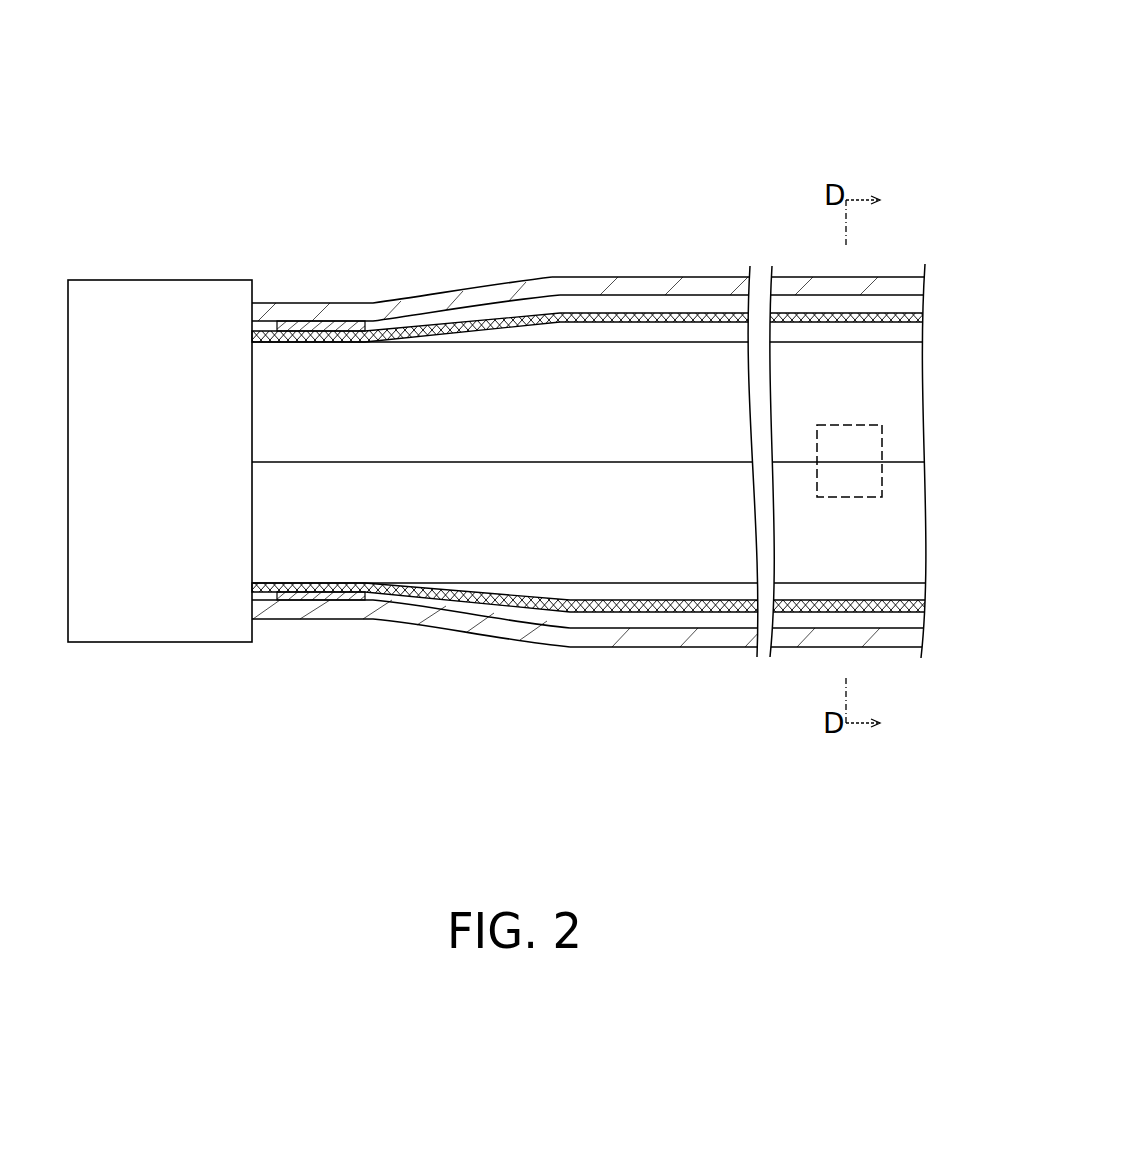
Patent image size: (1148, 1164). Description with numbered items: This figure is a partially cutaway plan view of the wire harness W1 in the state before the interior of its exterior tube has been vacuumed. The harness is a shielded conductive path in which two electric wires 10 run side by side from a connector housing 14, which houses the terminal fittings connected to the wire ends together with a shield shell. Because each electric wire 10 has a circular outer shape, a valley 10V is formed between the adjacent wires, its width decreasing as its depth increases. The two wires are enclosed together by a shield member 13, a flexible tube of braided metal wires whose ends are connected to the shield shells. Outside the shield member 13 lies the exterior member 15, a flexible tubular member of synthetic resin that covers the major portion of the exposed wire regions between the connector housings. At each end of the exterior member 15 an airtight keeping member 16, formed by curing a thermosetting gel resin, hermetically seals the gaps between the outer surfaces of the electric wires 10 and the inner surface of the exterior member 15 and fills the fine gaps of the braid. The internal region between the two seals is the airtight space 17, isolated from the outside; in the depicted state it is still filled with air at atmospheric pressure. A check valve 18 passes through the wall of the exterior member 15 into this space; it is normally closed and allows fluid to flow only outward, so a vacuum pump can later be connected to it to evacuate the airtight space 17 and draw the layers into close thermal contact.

The electric wire 10 is at (560, 518).
The valley 10V is at (676, 462).
The shield member 13 is at (647, 612).
The connector housing 14 is at (152, 297).
The exterior member 15 is at (467, 292).
The airtight keeping member 16 is at (325, 322).
The airtight space 17 is at (707, 300).
The check valve 18 is at (850, 497).
The wire harness W1 is at (742, 81).